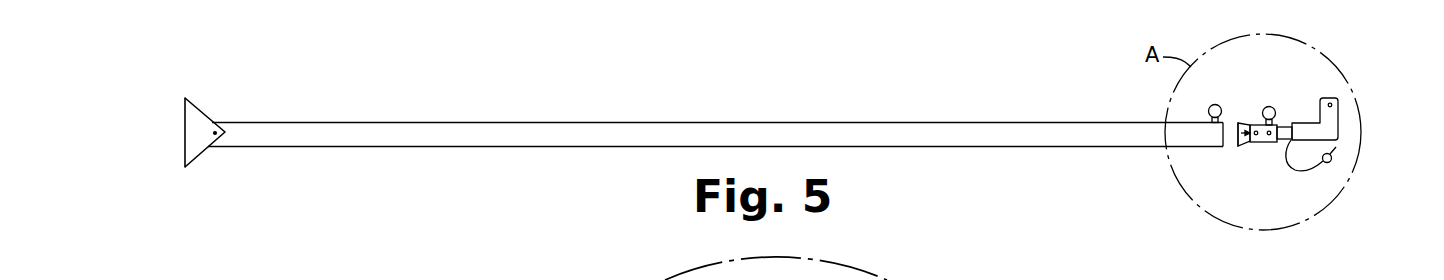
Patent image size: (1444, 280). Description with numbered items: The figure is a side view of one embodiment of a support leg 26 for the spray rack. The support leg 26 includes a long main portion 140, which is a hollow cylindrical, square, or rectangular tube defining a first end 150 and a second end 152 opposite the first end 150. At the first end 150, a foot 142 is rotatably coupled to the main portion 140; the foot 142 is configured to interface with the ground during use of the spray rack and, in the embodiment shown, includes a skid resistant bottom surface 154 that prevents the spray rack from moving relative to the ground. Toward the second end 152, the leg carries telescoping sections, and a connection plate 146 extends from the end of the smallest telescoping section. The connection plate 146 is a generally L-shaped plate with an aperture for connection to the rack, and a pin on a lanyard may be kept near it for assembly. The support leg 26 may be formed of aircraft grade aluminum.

The support leg 26 is at (769, 134).
The main portion 140 is at (528, 133).
The foot 142 is at (193, 112).
The connection plate 146 is at (1338, 131).
The first end 150 is at (252, 138).
The second end 152 is at (1190, 138).
The skid resistant bottom surface 154 is at (186, 147).